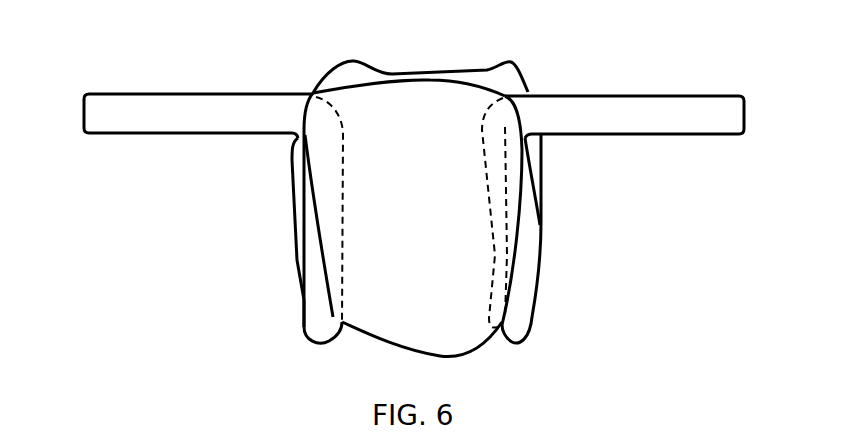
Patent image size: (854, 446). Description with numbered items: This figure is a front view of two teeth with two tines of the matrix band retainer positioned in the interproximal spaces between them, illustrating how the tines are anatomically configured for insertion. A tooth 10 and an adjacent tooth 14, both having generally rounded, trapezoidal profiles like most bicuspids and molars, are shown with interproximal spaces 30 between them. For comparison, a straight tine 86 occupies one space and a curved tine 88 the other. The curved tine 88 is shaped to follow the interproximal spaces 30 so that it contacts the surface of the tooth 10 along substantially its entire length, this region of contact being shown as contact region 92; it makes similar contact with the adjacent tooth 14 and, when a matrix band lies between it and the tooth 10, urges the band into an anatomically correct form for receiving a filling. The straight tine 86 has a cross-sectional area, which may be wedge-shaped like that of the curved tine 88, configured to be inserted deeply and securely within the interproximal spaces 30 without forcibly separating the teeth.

The tooth 10 is at (402, 322).
The adjacent tooth 14 is at (383, 73).
The interproximal spaces 30 is at (320, 88).
The straight tine 86 is at (316, 287).
The curved tine 88 is at (525, 278).
The contact region 92 is at (509, 241).